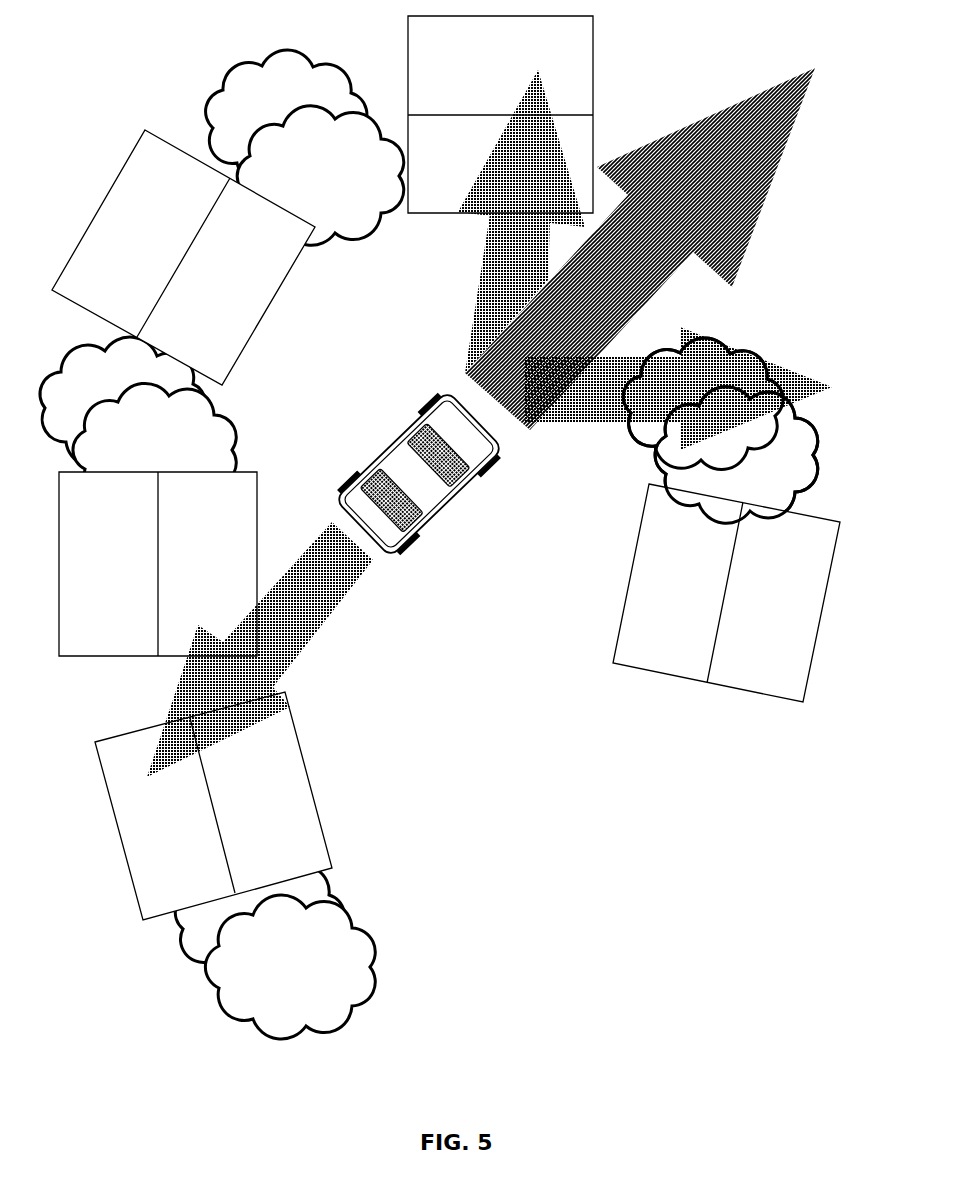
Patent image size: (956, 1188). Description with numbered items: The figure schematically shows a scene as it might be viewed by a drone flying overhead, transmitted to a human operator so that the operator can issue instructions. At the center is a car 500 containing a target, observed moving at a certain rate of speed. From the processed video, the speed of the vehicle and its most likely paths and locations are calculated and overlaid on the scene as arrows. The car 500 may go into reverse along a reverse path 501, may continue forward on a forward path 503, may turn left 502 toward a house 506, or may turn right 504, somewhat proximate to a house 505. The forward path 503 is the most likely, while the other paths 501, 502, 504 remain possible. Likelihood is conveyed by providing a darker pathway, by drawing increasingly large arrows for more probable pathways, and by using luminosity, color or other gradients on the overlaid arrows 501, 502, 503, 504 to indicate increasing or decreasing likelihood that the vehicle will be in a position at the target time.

The car 500 is at (419, 474).
The reverse path 501 is at (261, 649).
The left turn path 502 is at (497, 221).
The forward path 503 is at (640, 249).
The right turn path 504 is at (678, 378).
The house 505 is at (726, 593).
The house 506 is at (500, 114).